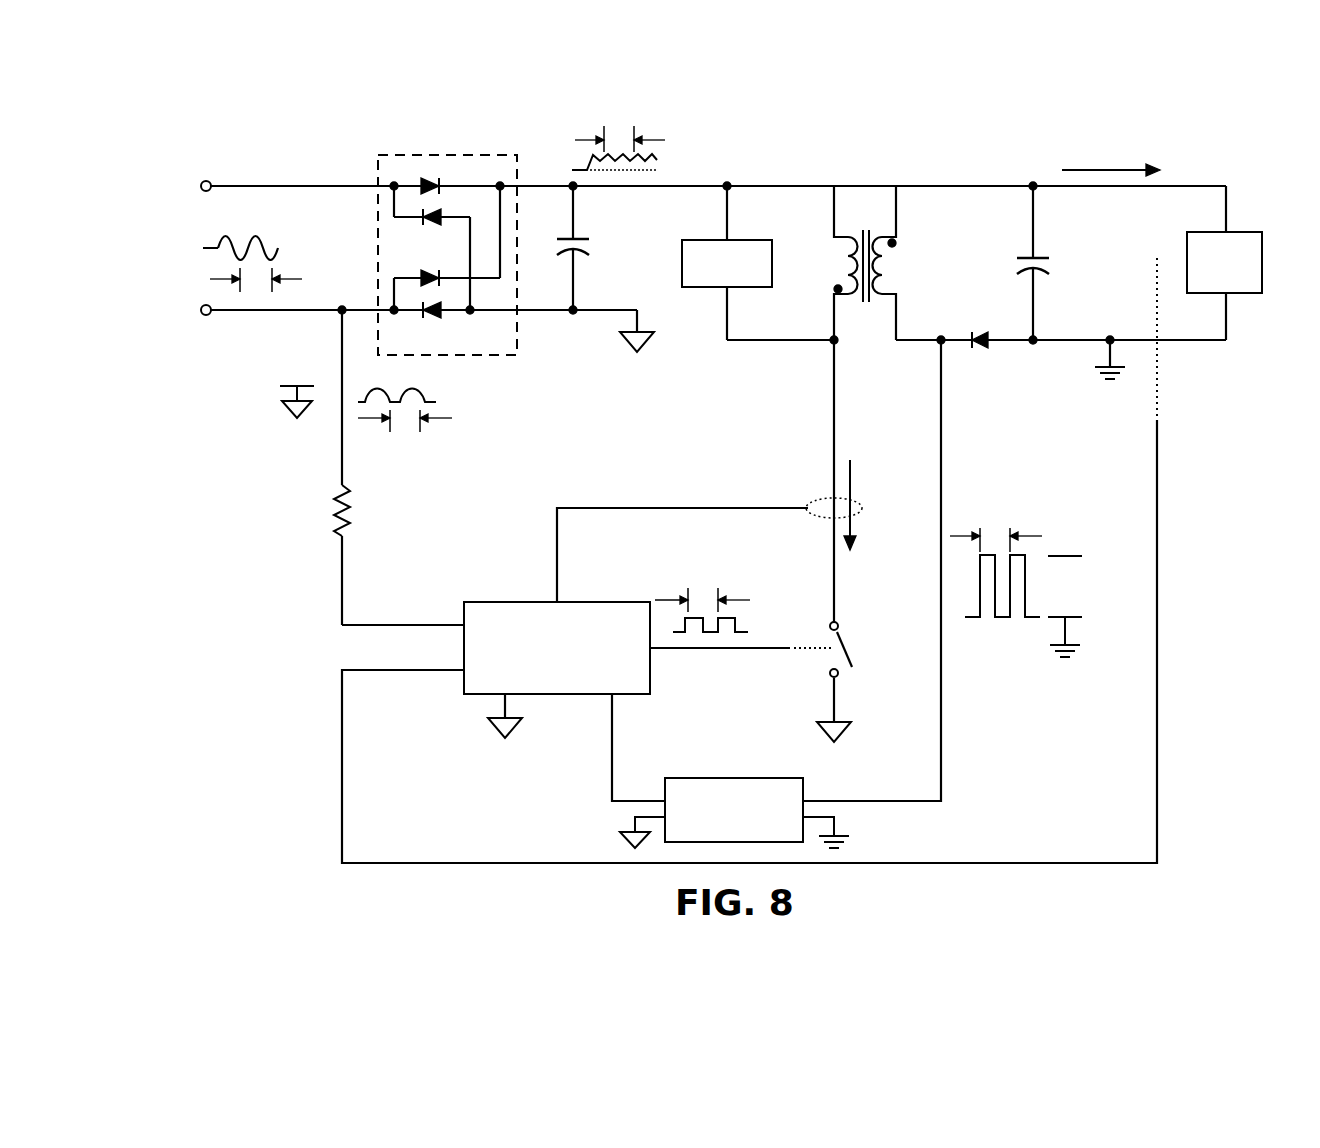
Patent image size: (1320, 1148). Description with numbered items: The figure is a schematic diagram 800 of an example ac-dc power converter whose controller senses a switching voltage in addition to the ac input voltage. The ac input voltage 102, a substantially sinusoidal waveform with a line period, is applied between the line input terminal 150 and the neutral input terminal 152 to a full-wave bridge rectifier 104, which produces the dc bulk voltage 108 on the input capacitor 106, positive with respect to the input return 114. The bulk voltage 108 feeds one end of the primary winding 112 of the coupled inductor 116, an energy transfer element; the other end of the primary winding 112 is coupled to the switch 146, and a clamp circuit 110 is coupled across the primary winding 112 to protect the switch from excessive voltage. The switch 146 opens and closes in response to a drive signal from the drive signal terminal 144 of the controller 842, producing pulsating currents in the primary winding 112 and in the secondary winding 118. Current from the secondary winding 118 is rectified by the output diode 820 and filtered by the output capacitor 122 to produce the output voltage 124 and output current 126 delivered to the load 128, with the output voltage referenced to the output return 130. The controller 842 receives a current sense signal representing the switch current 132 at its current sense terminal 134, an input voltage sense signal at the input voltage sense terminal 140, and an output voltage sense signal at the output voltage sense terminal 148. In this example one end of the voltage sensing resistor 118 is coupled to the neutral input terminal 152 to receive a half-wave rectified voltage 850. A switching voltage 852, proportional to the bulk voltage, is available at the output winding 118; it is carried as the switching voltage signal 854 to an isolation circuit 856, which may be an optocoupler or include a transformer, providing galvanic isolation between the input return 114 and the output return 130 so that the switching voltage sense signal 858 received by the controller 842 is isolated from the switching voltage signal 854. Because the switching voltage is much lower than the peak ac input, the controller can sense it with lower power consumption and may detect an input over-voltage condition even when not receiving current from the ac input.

The schematic diagram 800 is at (745, 134).
The line input terminal L 150 is at (205, 172).
The neutral input terminal N 152 is at (205, 330).
The ac input voltage V_AC 102 is at (182, 228).
The full-wave bridge rectifier 104 is at (375, 166).
The half-wave rectified voltage V_RECT 850 is at (280, 370).
The input capacitor C1 106 is at (568, 258).
The dc voltage V_BULK 108 is at (623, 242).
The input return 114 is at (643, 360).
The clamp circuit 110 is at (718, 292).
The primary winding 112 is at (845, 264).
The coupled inductor T1 116 is at (868, 228).
The secondary winding / input sensing resistor R1 118 is at (893, 258).
The output capacitor C2 122 is at (1025, 248).
The output voltage V_O 124 is at (1110, 248).
The output current I_O 126 is at (1130, 150).
The load 128 is at (1215, 296).
The output diode D2 820 is at (975, 352).
The output return 130 is at (1097, 372).
The switch current I_SW1 132 is at (866, 462).
The current sense terminal 134 is at (623, 502).
The controller 842 is at (520, 598).
The drive signal terminal 144 is at (763, 636).
The switch SW1 146 is at (850, 627).
The switching voltage V_SW 852 is at (1080, 568).
The switching voltage signal 854 is at (950, 755).
The isolation circuit 856 is at (735, 776).
The switching voltage sense signal 858 is at (618, 745).
The input voltage sense terminal 140 is at (340, 592).
The output voltage sense terminal 148 is at (340, 732).